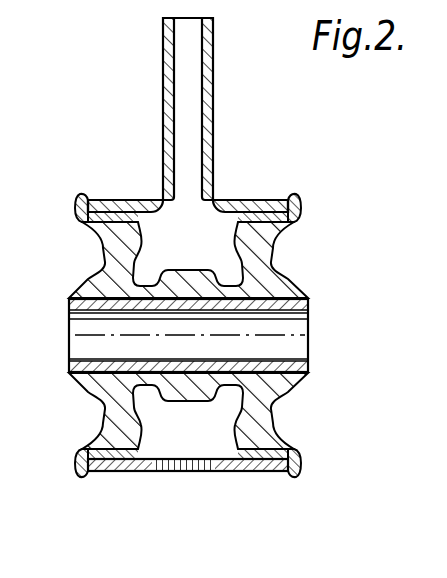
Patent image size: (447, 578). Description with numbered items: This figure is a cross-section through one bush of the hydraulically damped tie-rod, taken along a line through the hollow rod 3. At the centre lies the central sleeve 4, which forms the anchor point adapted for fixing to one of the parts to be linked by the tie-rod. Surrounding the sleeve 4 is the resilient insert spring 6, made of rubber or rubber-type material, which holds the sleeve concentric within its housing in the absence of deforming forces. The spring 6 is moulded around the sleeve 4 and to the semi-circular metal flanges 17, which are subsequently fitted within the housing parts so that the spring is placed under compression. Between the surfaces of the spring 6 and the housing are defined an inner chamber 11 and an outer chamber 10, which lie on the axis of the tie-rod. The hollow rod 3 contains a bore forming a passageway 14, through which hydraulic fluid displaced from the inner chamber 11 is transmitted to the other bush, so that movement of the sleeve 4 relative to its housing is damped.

The hollow rod 3 is at (205, 58).
The passageway 14 is at (190, 112).
The inner chamber 11 is at (221, 228).
The semi-circular metal flange 17 is at (80, 199).
The insert spring 6 is at (268, 263).
The central sleeve 4 is at (300, 333).
The outer chamber 10 is at (183, 443).